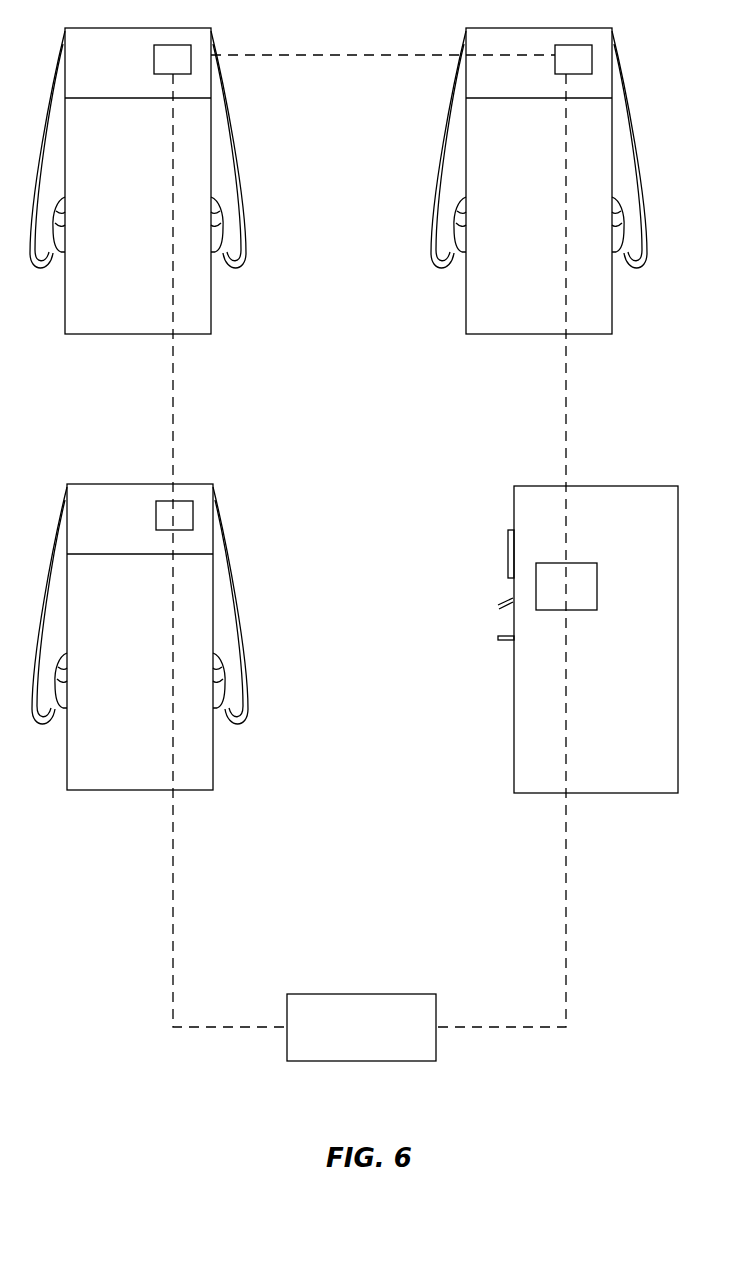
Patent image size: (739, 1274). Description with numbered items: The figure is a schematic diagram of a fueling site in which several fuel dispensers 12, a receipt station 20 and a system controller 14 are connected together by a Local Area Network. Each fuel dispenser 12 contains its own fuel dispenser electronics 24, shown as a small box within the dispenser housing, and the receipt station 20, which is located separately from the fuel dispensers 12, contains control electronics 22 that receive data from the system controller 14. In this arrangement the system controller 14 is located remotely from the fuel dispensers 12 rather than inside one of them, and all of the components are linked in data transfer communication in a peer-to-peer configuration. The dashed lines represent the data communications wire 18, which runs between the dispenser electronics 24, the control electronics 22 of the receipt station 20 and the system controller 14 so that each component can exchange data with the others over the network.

The fuel dispenser 12 is at (211, 113).
The fuel dispenser electronics 24 is at (154, 60).
The receipt station 20 is at (514, 510).
The control electronics 22 is at (585, 563).
The system controller 14 is at (378, 994).
The data communications wire 18 is at (567, 963).